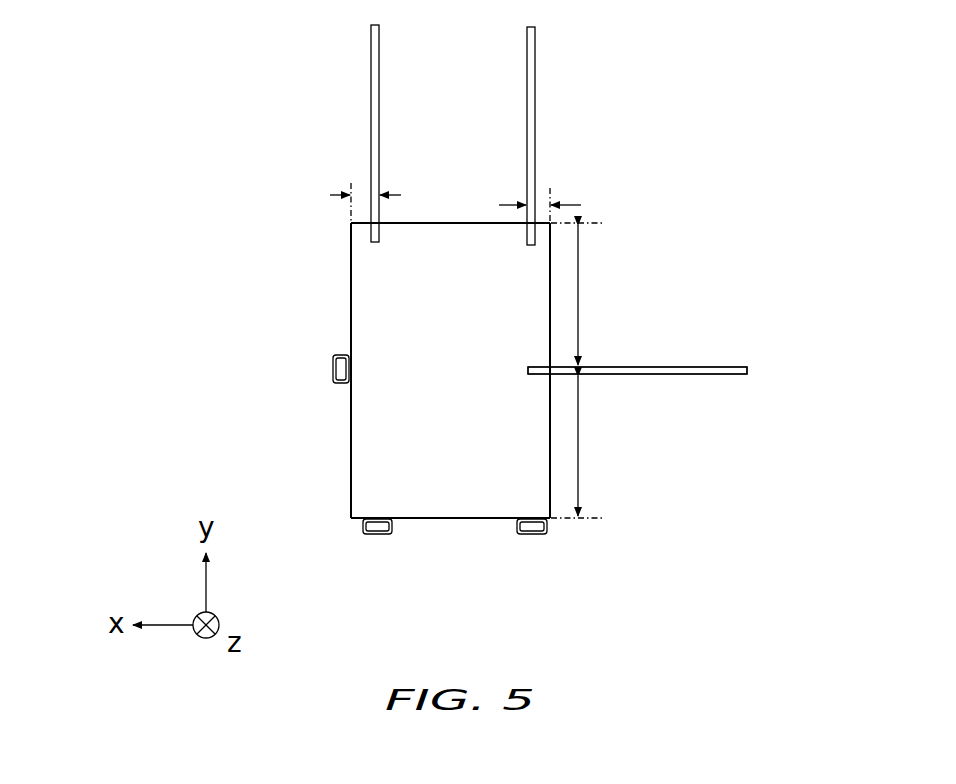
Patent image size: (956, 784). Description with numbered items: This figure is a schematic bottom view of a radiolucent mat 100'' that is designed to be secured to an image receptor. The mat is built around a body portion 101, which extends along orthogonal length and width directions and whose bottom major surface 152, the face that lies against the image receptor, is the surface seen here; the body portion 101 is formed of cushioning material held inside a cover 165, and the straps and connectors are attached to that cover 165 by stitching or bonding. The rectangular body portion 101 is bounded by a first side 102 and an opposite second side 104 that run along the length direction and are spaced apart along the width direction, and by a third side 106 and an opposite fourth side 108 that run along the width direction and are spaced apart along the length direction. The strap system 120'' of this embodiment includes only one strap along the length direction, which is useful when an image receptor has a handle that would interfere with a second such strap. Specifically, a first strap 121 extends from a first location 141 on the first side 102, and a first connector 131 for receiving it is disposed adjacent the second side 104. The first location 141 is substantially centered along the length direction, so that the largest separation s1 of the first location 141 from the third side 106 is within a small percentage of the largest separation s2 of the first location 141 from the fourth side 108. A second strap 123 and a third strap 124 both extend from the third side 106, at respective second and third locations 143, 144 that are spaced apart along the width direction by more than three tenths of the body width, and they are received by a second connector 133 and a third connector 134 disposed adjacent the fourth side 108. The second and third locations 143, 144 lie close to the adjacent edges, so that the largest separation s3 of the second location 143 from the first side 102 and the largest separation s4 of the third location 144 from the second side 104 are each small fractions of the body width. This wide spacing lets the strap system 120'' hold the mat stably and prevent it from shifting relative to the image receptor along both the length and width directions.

The radiolucent mat 100'' is at (220, 118).
The body portion 101 is at (365, 292).
The first side 102 is at (550, 305).
The second side 104 is at (358, 467).
The third side 106 is at (417, 232).
The fourth side 108 is at (424, 517).
The strap system 120'' is at (637, 322).
The first strap 121 is at (730, 366).
The second strap 123 is at (533, 80).
The third strap 124 is at (371, 62).
The first connector 131 is at (333, 366).
The second connector 133 is at (548, 533).
The third connector 134 is at (363, 530).
The first location 141 is at (538, 377).
The second location 143 is at (527, 230).
The third location 144 is at (374, 243).
The bottom major surface 152 is at (372, 343).
The cover 165 is at (494, 472).
The largest separation of the first location from the third side s1 is at (597, 295).
The largest separation of the first location from the fourth side s2 is at (599, 446).
The largest separation of the third location from the first side s3 is at (538, 200).
The largest separation of the fourth location from the second side s4 is at (362, 202).